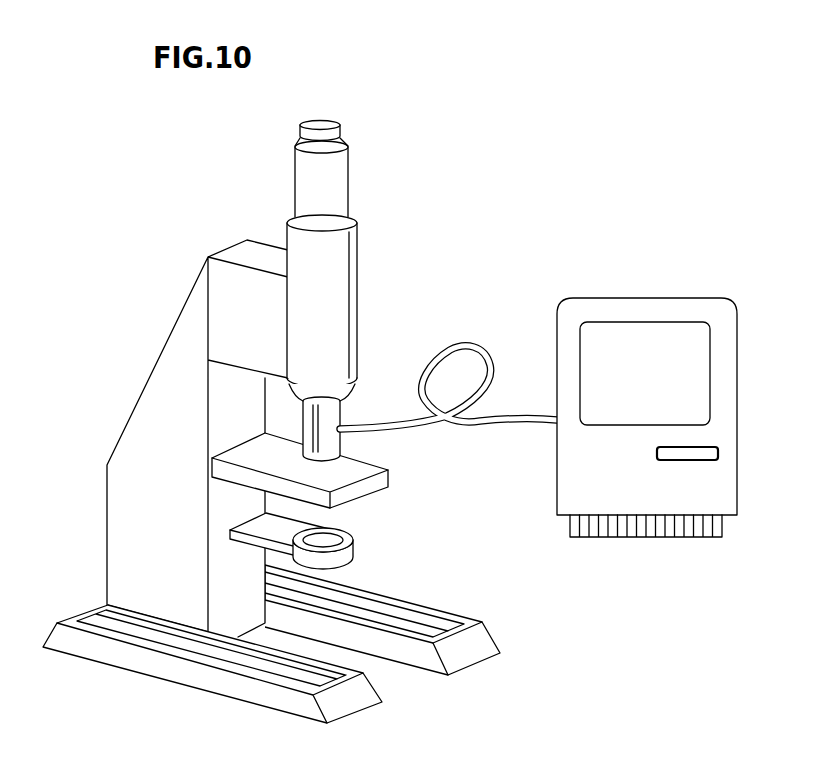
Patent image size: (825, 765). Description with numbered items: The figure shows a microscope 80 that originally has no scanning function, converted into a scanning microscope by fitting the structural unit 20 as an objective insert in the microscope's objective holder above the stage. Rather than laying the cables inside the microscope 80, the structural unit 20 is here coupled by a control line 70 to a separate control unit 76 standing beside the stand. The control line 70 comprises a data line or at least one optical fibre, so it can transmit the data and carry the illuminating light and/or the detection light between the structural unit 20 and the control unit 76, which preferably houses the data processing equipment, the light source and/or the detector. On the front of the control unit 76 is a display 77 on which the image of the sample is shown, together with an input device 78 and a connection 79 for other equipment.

The structural unit 20 is at (350, 442).
The control line 70 is at (463, 347).
The control unit 76 is at (737, 390).
The display 77 is at (622, 426).
The input device 78 is at (682, 460).
The connection 79 is at (722, 524).
The microscope 80 is at (188, 337).